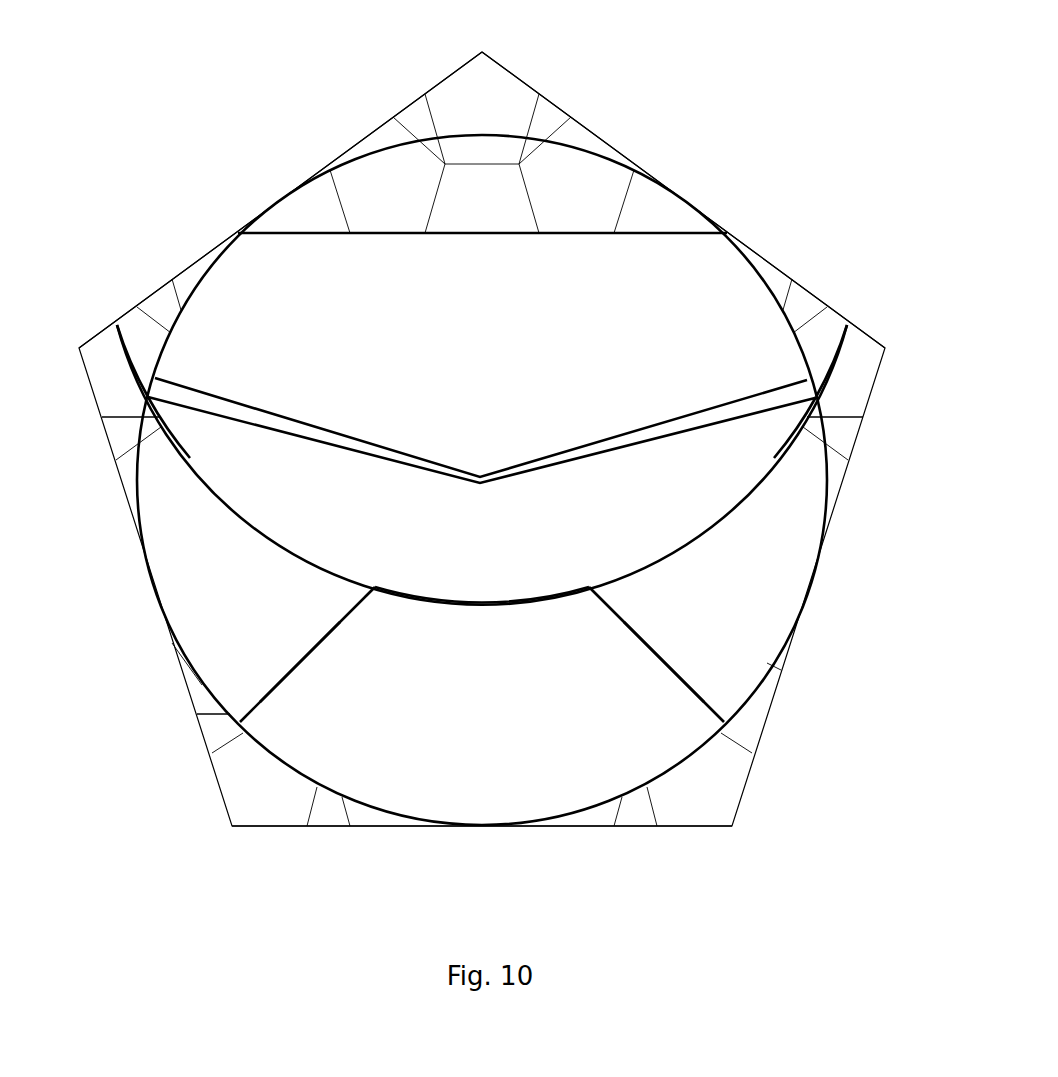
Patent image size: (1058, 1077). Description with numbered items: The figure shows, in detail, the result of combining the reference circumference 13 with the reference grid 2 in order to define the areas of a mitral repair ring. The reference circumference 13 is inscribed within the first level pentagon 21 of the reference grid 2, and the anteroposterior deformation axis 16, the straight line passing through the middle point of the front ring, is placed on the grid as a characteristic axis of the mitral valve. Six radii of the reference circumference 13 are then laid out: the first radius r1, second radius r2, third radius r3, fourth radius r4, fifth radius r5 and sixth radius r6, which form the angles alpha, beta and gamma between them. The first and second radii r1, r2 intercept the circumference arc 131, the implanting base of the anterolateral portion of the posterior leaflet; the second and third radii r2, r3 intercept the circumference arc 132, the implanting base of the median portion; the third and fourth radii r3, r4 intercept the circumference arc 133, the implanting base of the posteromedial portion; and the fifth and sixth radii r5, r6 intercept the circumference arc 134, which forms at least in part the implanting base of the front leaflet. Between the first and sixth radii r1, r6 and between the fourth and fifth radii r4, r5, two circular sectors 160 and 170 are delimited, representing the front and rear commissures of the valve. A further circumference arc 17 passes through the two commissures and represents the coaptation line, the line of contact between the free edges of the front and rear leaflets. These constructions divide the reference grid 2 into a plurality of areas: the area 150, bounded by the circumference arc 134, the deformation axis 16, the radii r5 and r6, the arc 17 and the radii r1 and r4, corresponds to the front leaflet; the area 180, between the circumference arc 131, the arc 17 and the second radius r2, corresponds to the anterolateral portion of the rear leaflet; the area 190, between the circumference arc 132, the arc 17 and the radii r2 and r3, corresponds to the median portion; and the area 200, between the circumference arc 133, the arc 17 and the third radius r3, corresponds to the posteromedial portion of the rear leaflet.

The reference grid 2 is at (707, 165).
The reference circumference 13 is at (762, 278).
The anteroposterior deformation axis 16 is at (565, 233).
The circumference arc 17 is at (643, 560).
The first level pentagon 21 is at (405, 106).
The circumference arc 131 is at (200, 683).
The circumference arc 132 is at (387, 812).
The circumference arc 133 is at (770, 667).
The circumference arc 134 is at (478, 135).
The area of the front leaflet 150 is at (465, 357).
The circular sector of the front commissure 160 is at (193, 400).
The circular sector of the rear commissure 170 is at (785, 393).
The area of the anterolateral portion 180 is at (221, 607).
The area of the median portion 190 is at (465, 707).
The area of the posteromedial portion 200 is at (720, 590).
The first radius r1 is at (247, 408).
The second radius r2 is at (297, 666).
The third radius r3 is at (663, 667).
The fourth radius r4 is at (780, 393).
The fifth radius r5 is at (710, 407).
The sixth radius r6 is at (232, 400).